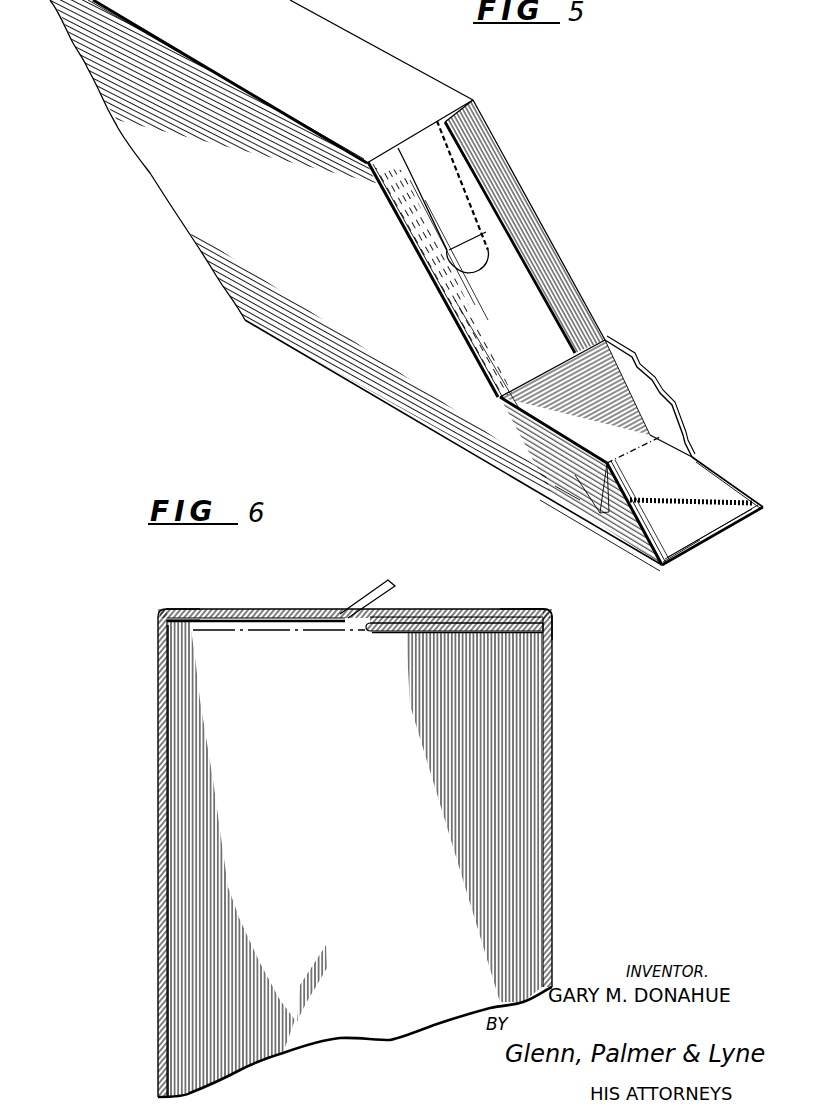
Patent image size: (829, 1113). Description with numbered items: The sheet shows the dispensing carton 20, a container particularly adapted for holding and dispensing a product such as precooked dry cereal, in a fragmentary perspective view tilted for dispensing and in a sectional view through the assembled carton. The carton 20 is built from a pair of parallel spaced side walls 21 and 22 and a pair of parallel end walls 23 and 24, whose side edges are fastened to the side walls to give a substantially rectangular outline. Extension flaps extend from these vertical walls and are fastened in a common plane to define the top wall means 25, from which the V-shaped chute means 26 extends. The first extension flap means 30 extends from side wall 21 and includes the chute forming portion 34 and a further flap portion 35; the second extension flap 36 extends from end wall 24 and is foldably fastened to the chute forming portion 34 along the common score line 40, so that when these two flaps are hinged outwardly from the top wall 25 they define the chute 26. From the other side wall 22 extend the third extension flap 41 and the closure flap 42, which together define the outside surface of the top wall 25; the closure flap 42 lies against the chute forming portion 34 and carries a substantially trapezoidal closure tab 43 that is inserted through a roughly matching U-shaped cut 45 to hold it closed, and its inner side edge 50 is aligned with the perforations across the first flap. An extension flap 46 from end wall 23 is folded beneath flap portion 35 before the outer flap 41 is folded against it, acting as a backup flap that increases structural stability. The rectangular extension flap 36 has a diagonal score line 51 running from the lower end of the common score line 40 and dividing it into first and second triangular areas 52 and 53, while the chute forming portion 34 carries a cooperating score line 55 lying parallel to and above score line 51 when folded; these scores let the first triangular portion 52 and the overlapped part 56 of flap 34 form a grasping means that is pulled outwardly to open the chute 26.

In FIG. 5, the dispensing carton 20 is at (609, 172).
In FIG. 6, the dispensing carton 20 is at (619, 753).
In FIG. 5, the side wall 21 is at (362, 352).
In FIG. 6, the side wall 21 is at (158, 952).
In FIG. 5, the side wall 22 is at (550, 236).
In FIG. 6, the side wall 22 is at (548, 852).
In FIG. 5, the end wall 23 is at (350, 50).
In FIG. 6, the end wall 23 is at (217, 775).
In FIG. 5, the end wall 24 is at (450, 447).
In FIG. 5, the top wall means 25 is at (523, 302).
In FIG. 6, the top wall means 25 is at (307, 582).
In FIG. 5, the V-shaped chute means 26 is at (666, 539).
In FIG. 5, the first extension flap means 30 is at (477, 313).
In FIG. 5, the chute forming portion 34 is at (623, 519).
In FIG. 6, the chute forming portion 34 is at (253, 610).
In FIG. 5, the flap portion 35 is at (492, 340).
In FIG. 5, the second extension flap means 36 is at (698, 480).
In FIG. 5, the common score line 40 is at (661, 566).
In FIG. 5, the third extension flap 41 is at (502, 181).
In FIG. 5, the closure flap 42 is at (657, 412).
In FIG. 6, the closure flap 42 is at (452, 608).
In FIG. 5, the closure tab 43 is at (655, 398).
In FIG. 6, the closure tab 43 is at (380, 607).
In FIG. 5, the U-shaped cut 45 is at (598, 468).
In FIG. 6, the U-shaped cut 45 is at (367, 622).
In FIG. 5, the extension flap 46 is at (408, 187).
In FIG. 5, the inner side edge 50 is at (608, 340).
In FIG. 5, the diagonal score line 51 is at (722, 510).
In FIG. 5, the first triangular area 52 is at (700, 530).
In FIG. 6, the first triangular area 52 is at (410, 634).
In FIG. 5, the second triangular area 53 is at (712, 486).
In FIG. 6, the second triangular area 53 is at (480, 633).
In FIG. 5, the cooperating score line 55 is at (571, 493).
In FIG. 6, the overlapped part of extension flap 56 is at (513, 613).